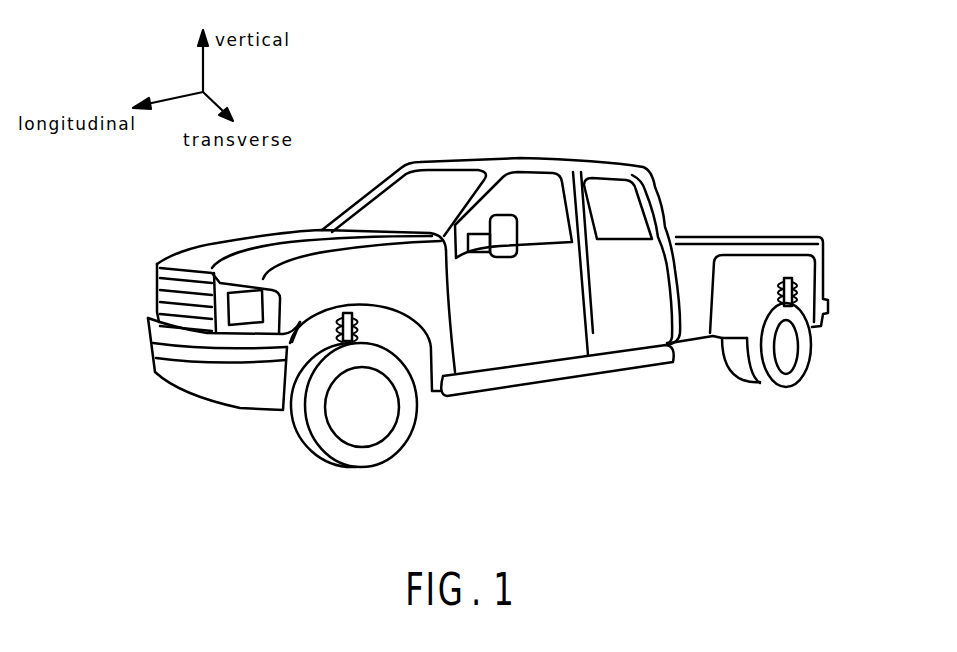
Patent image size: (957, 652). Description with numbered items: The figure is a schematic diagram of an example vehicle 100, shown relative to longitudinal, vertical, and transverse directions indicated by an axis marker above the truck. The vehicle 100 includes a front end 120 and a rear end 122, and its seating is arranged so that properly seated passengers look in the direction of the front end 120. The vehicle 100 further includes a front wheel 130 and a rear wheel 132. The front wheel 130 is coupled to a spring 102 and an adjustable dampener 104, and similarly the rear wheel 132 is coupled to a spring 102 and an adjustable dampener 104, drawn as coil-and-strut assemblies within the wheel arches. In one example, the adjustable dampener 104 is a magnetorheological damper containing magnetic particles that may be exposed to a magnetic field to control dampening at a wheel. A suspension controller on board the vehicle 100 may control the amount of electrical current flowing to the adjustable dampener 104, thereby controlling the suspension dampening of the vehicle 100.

The vehicle 100 is at (473, 160).
The spring 102 is at (338, 318).
The adjustable dampener 104 is at (352, 313).
The front end 120 is at (119, 299).
The rear end 122 is at (858, 249).
The front wheel 130 is at (383, 425).
The rear wheel 132 is at (790, 347).